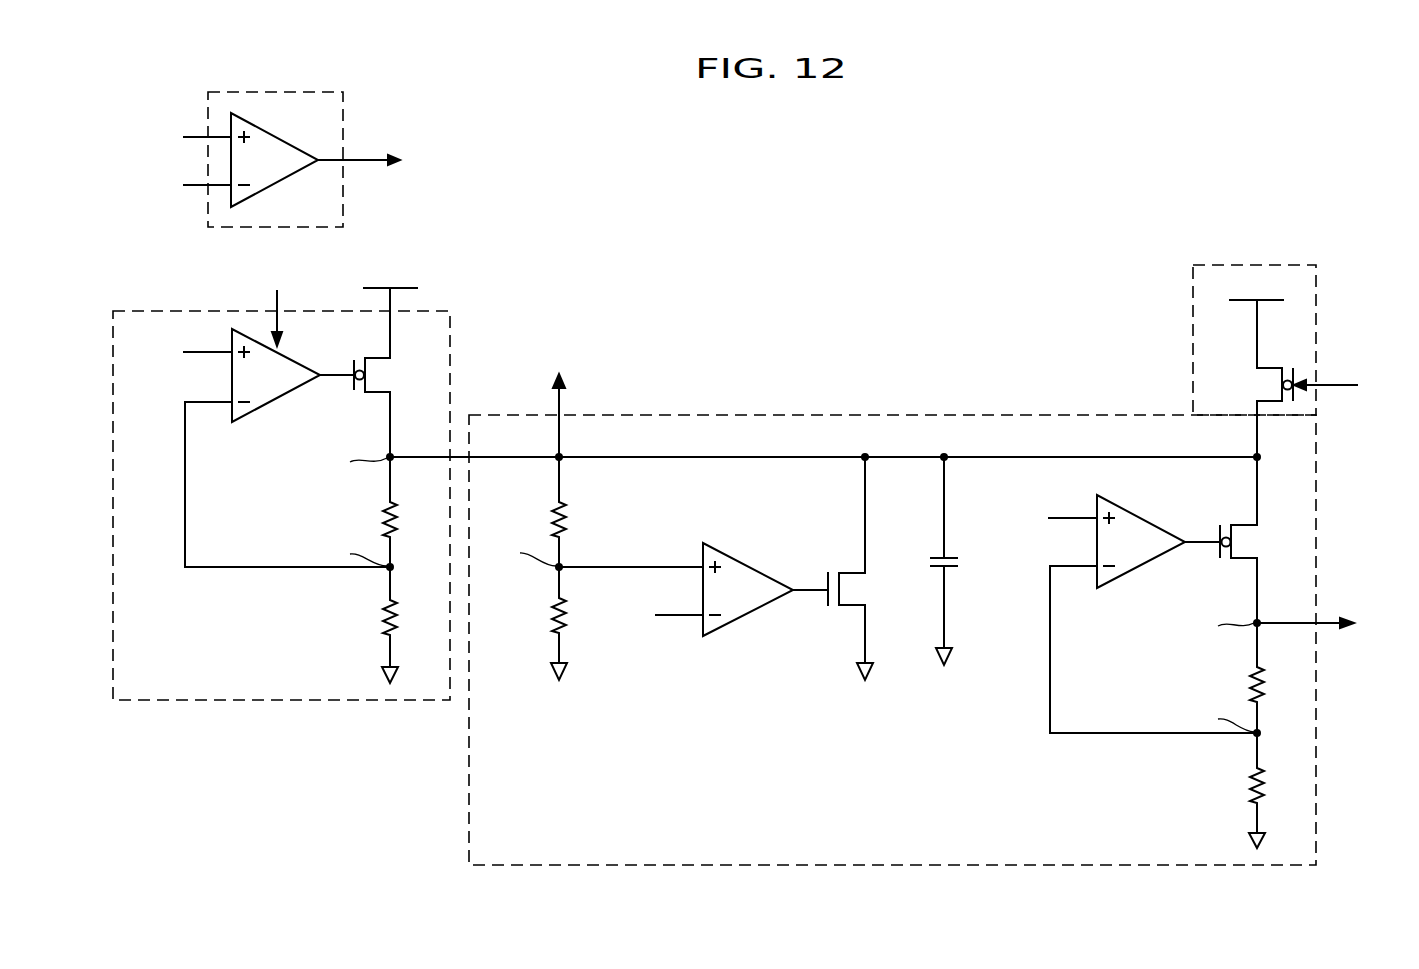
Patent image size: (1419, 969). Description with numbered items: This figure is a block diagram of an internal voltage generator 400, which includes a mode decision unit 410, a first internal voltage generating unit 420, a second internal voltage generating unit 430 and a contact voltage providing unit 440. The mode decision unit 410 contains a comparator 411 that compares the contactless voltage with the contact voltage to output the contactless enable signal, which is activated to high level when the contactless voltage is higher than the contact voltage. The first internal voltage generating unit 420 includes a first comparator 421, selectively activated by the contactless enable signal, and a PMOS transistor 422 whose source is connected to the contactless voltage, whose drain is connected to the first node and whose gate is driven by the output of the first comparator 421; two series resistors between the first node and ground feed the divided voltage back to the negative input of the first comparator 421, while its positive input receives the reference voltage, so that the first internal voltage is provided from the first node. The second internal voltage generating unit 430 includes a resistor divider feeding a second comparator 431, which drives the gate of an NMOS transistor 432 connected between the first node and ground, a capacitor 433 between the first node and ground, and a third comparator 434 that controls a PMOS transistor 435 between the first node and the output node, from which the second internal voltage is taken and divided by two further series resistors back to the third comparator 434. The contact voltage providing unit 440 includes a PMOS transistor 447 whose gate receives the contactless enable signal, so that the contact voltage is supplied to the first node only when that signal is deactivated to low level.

The internal voltage generator 400 is at (782, 187).
The mode decision unit 410 is at (343, 218).
The comparator 411 is at (278, 133).
The first internal voltage generating unit 420 is at (210, 311).
The first comparator 421 is at (250, 413).
The PMOS transistor 422 is at (378, 375).
The second internal voltage generating unit 430 is at (960, 414).
The second comparator 431 is at (745, 612).
The NMOS transistor 432 is at (853, 590).
The capacitor 433 is at (960, 563).
The third comparator 434 is at (1115, 580).
The PMOS transistor 435 is at (1243, 542).
The contact voltage providing unit 440 is at (1316, 300).
The PMOS transistor 447 is at (1275, 385).